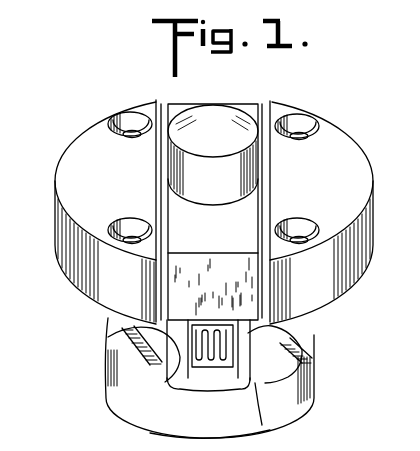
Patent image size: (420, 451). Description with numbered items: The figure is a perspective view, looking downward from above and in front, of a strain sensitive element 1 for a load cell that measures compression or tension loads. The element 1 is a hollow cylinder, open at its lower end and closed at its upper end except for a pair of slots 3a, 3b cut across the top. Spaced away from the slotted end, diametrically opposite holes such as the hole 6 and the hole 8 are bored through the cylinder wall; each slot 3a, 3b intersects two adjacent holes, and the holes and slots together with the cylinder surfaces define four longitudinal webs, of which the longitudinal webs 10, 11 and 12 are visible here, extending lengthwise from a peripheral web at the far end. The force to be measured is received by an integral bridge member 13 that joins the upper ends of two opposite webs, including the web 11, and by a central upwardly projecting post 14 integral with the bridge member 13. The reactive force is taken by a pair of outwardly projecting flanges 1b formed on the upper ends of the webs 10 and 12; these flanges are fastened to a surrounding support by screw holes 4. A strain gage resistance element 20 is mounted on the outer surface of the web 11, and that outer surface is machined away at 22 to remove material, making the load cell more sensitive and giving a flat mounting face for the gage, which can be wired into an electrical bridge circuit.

The strain sensitive element 1 is at (40, 166).
The outwardly projecting flanges 1b is at (78, 139).
The slot 3a is at (158, 100).
The slot 3b is at (264, 101).
The screw holes 4 is at (120, 111).
The hole 6 is at (132, 370).
The hole 8 is at (310, 387).
The longitudinal web 10 is at (123, 332).
The longitudinal web 11 is at (262, 426).
The longitudinal web 12 is at (297, 331).
The bridge member 13 is at (177, 240).
The post 14 is at (207, 116).
The strain gage resistance element 20 is at (192, 363).
The machined-away surface 22 is at (205, 389).